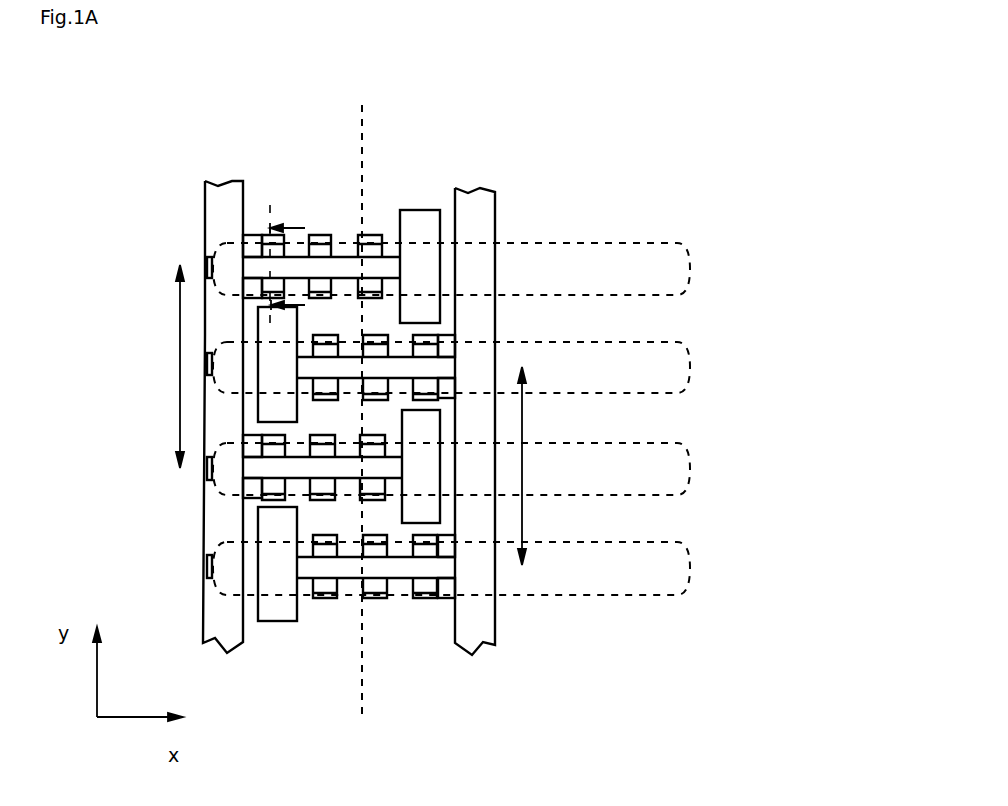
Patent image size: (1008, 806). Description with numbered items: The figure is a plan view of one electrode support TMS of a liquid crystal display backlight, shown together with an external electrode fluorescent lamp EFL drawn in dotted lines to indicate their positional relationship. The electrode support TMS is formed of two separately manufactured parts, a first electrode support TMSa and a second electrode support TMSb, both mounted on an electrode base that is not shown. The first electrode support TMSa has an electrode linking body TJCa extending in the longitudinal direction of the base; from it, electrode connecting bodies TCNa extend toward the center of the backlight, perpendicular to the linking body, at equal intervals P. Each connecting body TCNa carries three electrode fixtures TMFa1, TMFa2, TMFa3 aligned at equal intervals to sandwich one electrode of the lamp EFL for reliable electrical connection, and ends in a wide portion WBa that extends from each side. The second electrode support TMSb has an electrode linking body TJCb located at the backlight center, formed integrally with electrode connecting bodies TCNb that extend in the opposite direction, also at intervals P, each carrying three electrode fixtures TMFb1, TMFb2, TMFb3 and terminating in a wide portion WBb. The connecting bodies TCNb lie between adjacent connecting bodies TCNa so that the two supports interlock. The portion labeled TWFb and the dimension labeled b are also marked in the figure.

The electrode support TMS is at (290, 125).
The first electrode support TMSa is at (214, 165).
The second electrode support TMSb is at (478, 178).
The electrode fixture TMFa1 is at (267, 233).
The electrode fixture TMFa2 is at (333, 235).
The electrode fixture TMFa3 is at (372, 233).
The electrode fixture TMFb1 is at (428, 599).
The electrode fixture TMFb2 is at (372, 599).
The electrode fixture TMFb3 is at (312, 599).
The wide portion WBa is at (427, 263).
The wide portion WBb is at (273, 567).
The external electrode fluorescent lamp EFL is at (612, 243).
The electrode linking body TJCa is at (230, 322).
The electrode linking body TJCb is at (477, 550).
The electrode connecting body TCNa is at (347, 267).
The electrode connecting body TCNb is at (413, 567).
The wide finger portion b TWFb is at (432, 400).
The interval P is at (351, 415).
The width b is at (301, 267).